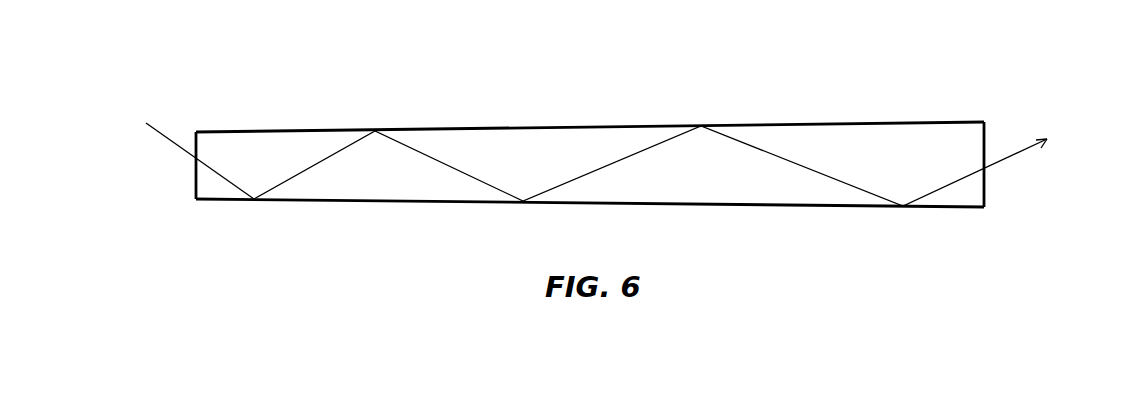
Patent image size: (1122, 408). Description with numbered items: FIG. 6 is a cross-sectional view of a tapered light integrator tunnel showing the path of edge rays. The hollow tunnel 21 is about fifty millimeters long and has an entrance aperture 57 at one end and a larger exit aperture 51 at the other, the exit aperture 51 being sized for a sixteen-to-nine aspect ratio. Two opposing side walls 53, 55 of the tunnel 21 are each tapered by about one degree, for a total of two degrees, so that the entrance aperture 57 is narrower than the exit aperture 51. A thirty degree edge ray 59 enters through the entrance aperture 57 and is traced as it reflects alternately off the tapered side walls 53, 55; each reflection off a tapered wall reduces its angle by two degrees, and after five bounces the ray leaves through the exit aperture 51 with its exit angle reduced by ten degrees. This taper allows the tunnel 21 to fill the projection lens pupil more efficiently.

The hollow tunnel 21 is at (576, 141).
The exit aperture 51 is at (985, 184).
The side wall 53 is at (620, 128).
The side wall 55 is at (645, 205).
The entrance aperture 57 is at (196, 188).
The edge ray 59 is at (160, 134).